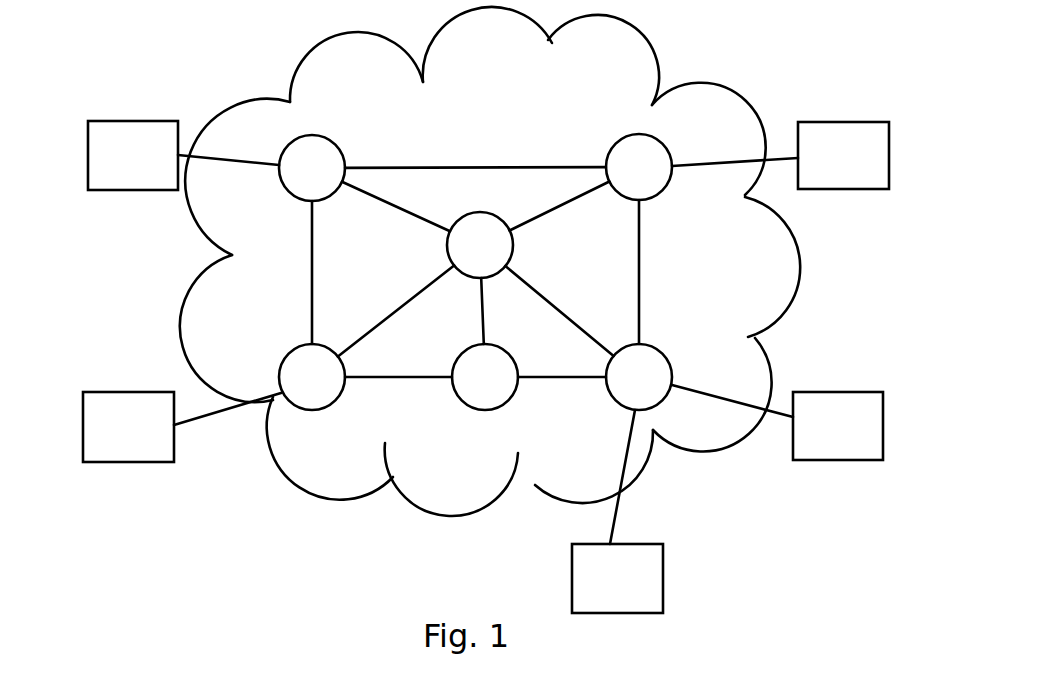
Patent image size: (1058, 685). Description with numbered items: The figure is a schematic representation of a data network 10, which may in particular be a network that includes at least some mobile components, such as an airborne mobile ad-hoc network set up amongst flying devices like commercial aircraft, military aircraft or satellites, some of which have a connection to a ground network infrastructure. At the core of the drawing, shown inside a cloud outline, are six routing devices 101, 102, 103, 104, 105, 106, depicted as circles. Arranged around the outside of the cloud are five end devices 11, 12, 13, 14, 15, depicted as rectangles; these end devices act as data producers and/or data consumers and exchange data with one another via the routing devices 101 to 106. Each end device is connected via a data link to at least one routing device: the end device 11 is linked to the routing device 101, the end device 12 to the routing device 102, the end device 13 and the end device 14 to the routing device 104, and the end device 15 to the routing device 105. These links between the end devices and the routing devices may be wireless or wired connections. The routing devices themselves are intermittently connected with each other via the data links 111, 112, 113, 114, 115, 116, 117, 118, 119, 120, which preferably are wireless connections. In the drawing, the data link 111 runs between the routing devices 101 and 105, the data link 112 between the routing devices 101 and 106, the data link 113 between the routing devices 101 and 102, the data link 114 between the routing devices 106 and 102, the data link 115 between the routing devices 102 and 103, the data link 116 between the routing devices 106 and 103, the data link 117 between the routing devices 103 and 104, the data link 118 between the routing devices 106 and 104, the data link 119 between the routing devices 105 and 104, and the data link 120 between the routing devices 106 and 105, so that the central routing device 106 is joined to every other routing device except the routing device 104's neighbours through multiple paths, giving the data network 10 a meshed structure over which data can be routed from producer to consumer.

The data network 10 is at (235, 488).
The end device 11 is at (128, 137).
The end device 12 is at (132, 408).
The end device 13 is at (655, 578).
The end device 14 is at (841, 403).
The end device 15 is at (847, 177).
The routing device 101 is at (303, 155).
The routing device 102 is at (308, 395).
The routing device 103 is at (493, 382).
The routing device 104 is at (648, 392).
The routing device 105 is at (650, 150).
The routing device 106 is at (487, 235).
The data link 111 is at (427, 162).
The data link 112 is at (425, 222).
The data link 113 is at (310, 268).
The data link 114 is at (360, 336).
The data link 115 is at (385, 378).
The data link 116 is at (484, 297).
The data link 117 is at (558, 378).
The data link 118 is at (538, 290).
The data link 119 is at (640, 300).
The data link 120 is at (573, 195).